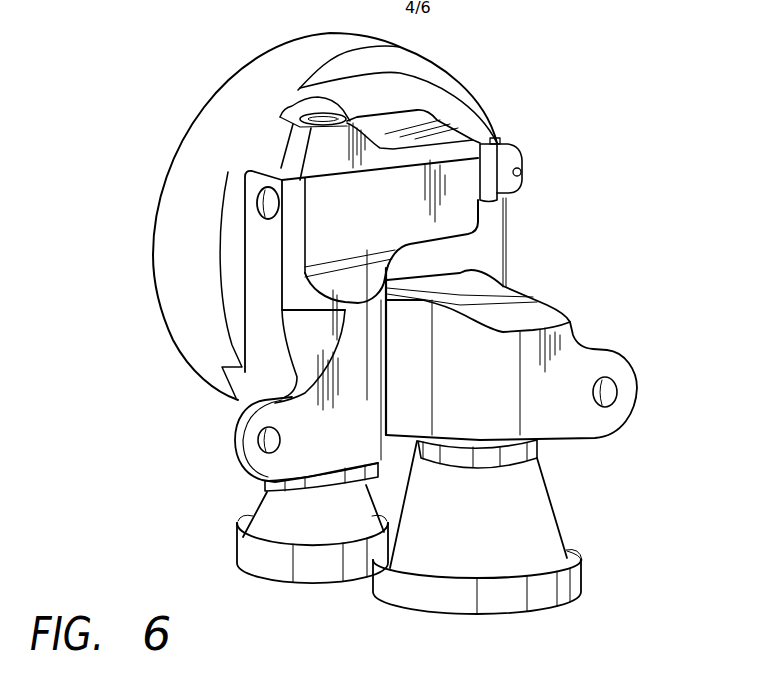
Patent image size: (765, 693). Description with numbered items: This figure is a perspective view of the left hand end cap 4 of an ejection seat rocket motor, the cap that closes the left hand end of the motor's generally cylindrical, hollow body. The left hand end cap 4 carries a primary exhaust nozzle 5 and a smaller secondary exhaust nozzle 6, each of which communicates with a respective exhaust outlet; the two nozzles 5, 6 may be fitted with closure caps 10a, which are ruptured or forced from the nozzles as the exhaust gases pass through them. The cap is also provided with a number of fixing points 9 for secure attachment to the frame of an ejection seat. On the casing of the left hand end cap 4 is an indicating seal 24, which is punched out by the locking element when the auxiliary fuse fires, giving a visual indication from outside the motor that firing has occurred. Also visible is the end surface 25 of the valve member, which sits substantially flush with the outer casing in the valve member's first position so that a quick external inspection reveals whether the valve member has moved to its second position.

The left hand end cap 4 is at (536, 80).
The primary exhaust nozzle 5 is at (540, 503).
The secondary exhaust nozzle 6 is at (270, 505).
The fixing points 9 is at (260, 441).
The closure caps 10a is at (245, 556).
The indicating seal 24 is at (264, 205).
The end surface 25 is at (318, 118).